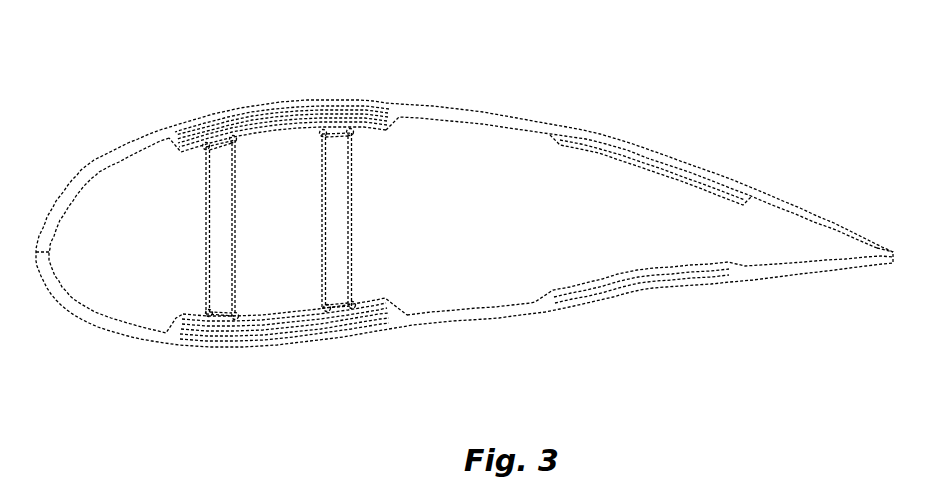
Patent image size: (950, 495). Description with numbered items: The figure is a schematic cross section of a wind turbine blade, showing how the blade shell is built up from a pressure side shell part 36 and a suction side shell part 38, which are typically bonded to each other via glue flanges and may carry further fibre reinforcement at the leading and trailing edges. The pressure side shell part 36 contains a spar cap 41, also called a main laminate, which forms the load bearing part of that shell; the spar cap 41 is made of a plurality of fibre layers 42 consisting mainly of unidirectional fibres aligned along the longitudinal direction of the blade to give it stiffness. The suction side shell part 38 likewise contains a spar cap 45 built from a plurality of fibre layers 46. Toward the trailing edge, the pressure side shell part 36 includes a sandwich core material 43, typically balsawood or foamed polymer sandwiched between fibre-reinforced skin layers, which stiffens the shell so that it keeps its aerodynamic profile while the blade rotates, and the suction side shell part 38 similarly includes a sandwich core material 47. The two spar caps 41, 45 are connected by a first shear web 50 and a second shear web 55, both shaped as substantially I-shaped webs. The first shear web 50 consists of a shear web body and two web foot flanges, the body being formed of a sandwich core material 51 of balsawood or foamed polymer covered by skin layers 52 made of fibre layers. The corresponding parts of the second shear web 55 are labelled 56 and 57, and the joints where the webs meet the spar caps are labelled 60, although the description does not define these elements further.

The pressure side shell part 36 is at (513, 314).
The suction side shell part 38 is at (500, 117).
The spar cap 41 is at (293, 350).
The fibre layers 42 is at (279, 342).
The sandwich core material 43 is at (651, 282).
The spar cap 45 is at (279, 86).
The fibre layers 46 is at (366, 110).
The sandwich core material 47 is at (651, 163).
The first shear web 50 is at (246, 228).
The sandwich core material 51 is at (236, 252).
The skin layers 52 is at (237, 182).
The second shear web 55 is at (371, 220).
The second shear web panel 56 is at (356, 212).
The second shear web panel 57 is at (356, 193).
The joints 60 is at (322, 137).